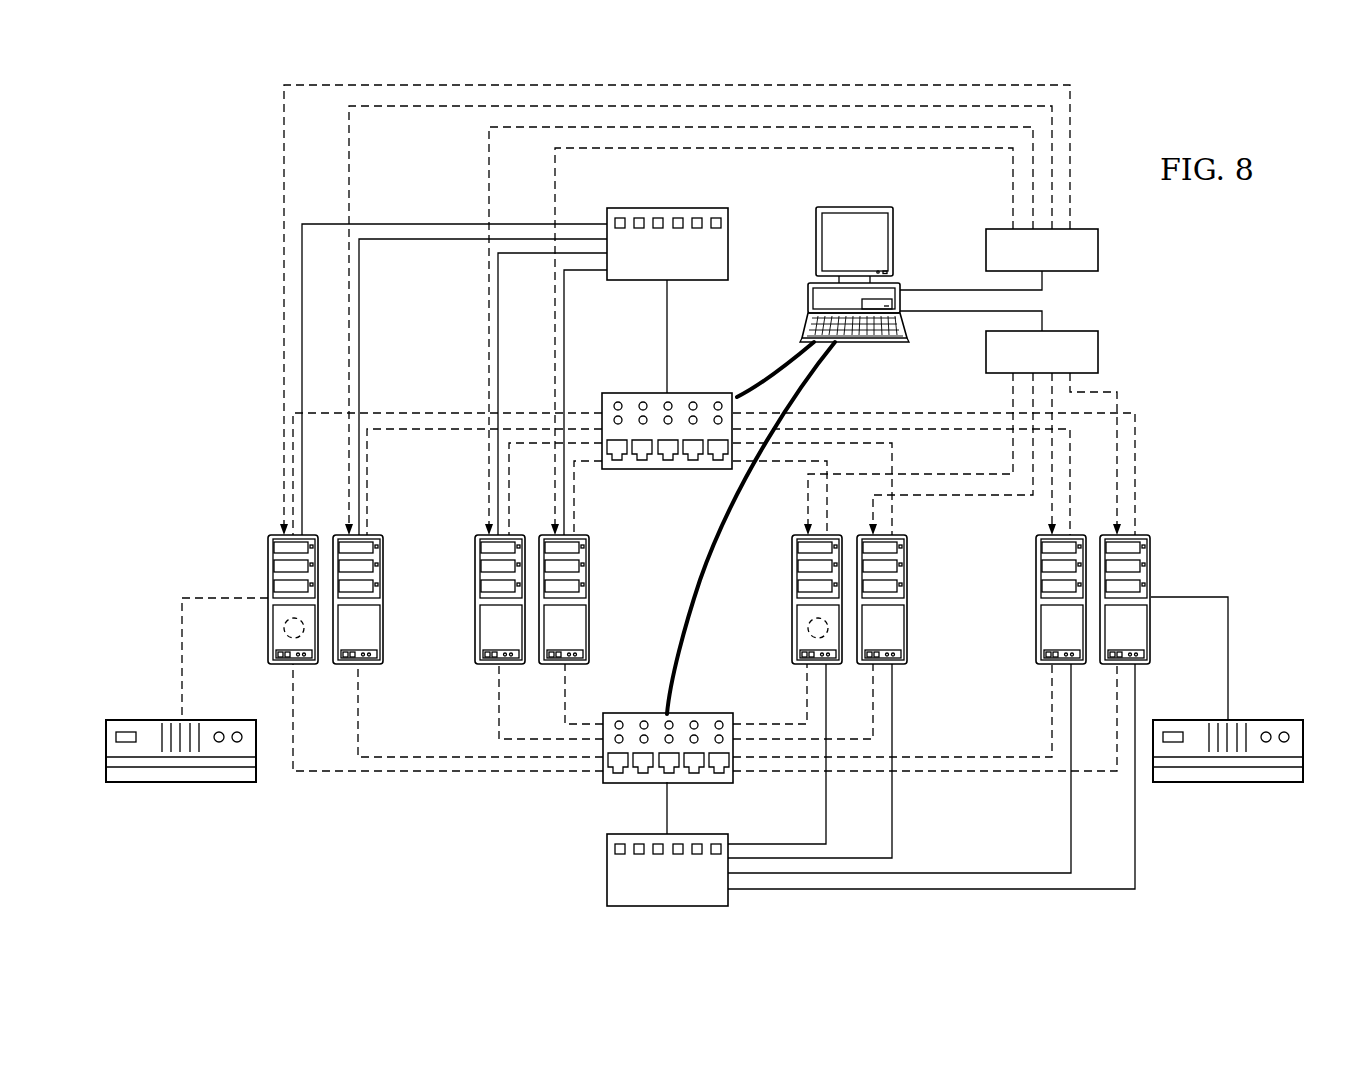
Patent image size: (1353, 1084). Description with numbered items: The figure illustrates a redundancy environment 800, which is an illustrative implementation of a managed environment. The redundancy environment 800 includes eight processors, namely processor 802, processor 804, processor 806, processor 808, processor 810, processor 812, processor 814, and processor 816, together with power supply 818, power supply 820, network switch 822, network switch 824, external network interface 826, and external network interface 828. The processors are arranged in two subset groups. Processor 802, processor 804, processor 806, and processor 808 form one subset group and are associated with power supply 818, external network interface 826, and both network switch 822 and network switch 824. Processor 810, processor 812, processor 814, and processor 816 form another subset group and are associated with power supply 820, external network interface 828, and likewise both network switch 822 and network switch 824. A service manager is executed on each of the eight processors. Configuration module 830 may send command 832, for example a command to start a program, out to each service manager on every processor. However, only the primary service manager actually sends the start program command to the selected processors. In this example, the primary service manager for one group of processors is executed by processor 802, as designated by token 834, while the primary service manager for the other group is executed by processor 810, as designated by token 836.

The redundancy environment 800 is at (220, 310).
The processor 802 is at (268, 562).
The processor 804 is at (381, 535).
The processor 806 is at (477, 664).
The processor 808 is at (589, 562).
The processor 810 is at (792, 648).
The processor 812 is at (907, 562).
The processor 814 is at (1036, 636).
The processor 816 is at (1151, 562).
The power supply 818 is at (728, 240).
The power supply 820 is at (607, 885).
The network switch 822 is at (716, 392).
The network switch 824 is at (632, 783).
The external network interface 826 is at (171, 782).
The external network interface 828 is at (1244, 782).
The configuration module 830 is at (893, 232).
The command 832 is at (1098, 252).
The token 834 is at (284, 626).
The token 836 is at (808, 626).